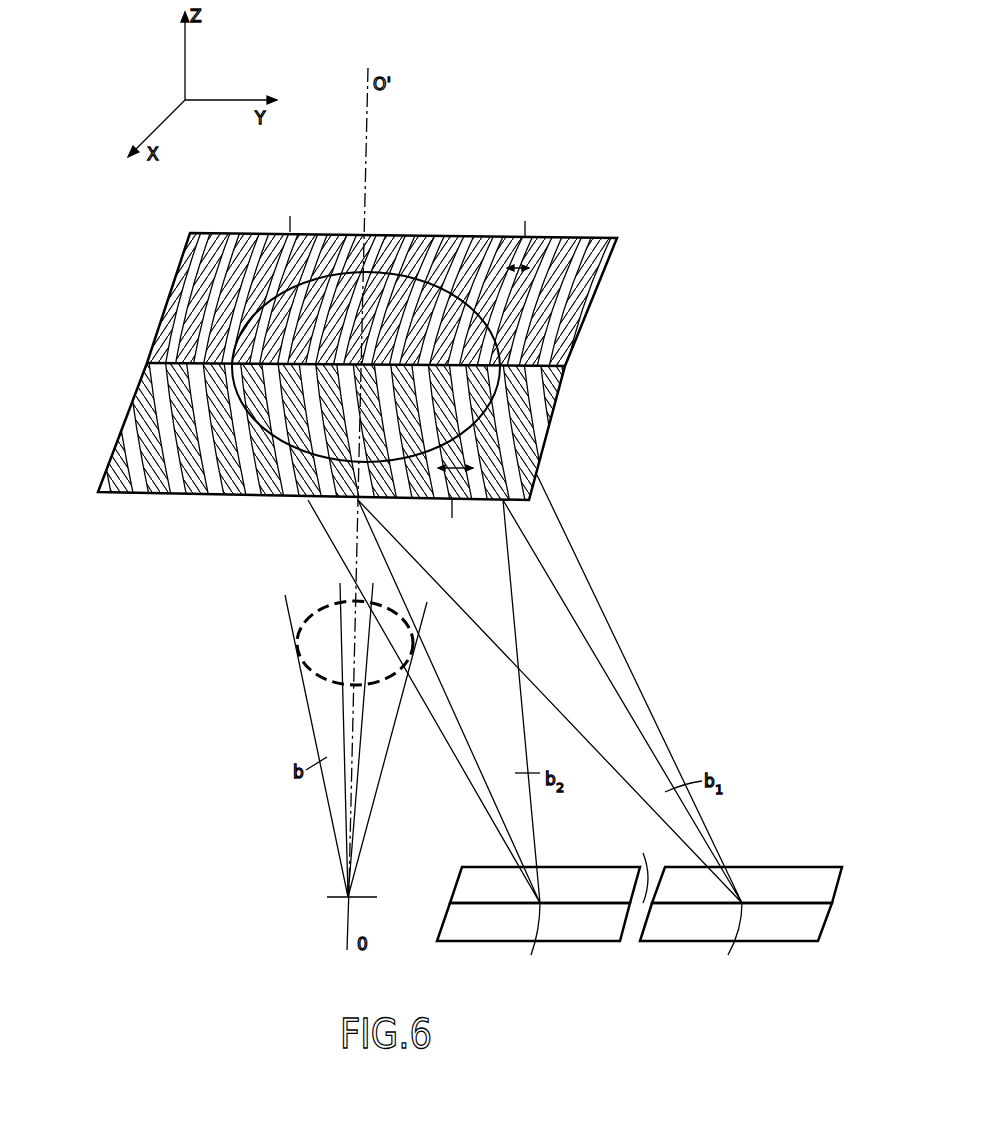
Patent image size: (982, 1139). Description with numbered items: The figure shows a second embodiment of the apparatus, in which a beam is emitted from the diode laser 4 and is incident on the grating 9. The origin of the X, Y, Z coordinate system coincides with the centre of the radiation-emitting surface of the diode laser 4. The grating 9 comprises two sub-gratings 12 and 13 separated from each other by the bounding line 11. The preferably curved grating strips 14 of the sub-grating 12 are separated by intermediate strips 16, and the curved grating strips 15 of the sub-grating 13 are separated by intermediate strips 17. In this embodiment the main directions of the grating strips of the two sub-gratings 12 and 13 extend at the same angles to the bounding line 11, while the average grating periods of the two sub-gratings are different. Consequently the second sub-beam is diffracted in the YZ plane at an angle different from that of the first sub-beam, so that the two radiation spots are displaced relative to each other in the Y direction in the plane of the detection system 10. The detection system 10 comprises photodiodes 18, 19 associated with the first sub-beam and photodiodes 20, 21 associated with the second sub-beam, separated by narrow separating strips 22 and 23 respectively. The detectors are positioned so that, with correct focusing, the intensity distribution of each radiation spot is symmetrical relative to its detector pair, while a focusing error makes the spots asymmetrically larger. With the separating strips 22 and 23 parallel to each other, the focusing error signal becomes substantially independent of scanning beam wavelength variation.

The diode laser 4 is at (347, 899).
The grating 9 is at (466, 231).
The radiation-sensitive detection system 10 is at (627, 947).
The bounding line 11 is at (145, 361).
The sub-grating 12 is at (180, 262).
The sub-grating 13 is at (132, 403).
The grating strips 14 is at (386, 243).
The grating strips 15 is at (307, 475).
The intermediate strips 16 is at (405, 242).
The intermediate strips 17 is at (287, 467).
The photodiode 18 is at (797, 877).
The photodiode 19 is at (793, 937).
The photodiode 20 is at (465, 883).
The photodiode 21 is at (450, 923).
The separating strip 22 is at (758, 903).
The separating strip 23 is at (452, 902).